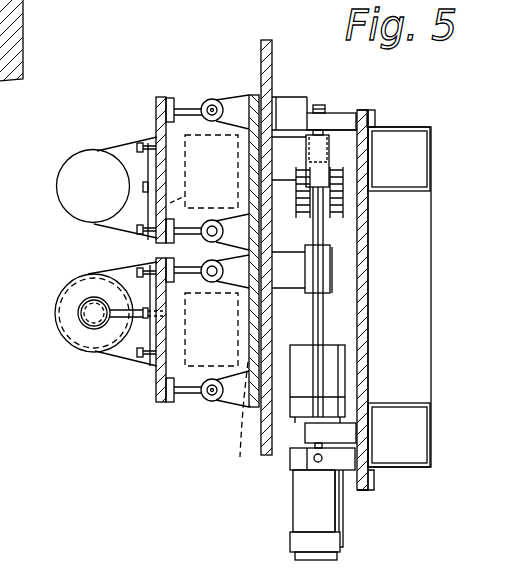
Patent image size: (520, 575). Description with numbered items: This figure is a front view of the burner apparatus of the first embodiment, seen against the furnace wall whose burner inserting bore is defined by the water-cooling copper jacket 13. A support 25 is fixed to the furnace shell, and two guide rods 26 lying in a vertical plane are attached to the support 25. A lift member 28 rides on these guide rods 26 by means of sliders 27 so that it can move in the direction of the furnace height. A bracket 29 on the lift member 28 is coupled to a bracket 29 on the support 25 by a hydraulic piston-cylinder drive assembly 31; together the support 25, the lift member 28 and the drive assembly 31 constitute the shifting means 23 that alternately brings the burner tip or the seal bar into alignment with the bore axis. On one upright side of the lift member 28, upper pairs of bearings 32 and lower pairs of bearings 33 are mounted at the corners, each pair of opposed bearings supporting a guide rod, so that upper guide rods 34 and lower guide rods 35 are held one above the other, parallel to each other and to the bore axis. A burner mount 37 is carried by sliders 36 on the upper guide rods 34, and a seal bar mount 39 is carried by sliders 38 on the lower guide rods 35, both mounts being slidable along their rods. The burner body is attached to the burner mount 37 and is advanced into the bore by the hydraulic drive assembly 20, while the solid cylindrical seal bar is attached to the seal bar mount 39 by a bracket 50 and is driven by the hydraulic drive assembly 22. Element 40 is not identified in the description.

The water-cooling copper jacket 13 is at (30, 1).
The drive assembly 20 is at (150, 208).
The drive assembly 22 is at (214, 289).
The shifting means 23 is at (347, 503).
The support 25 is at (431, 128).
The guide rods 26 is at (320, 322).
The sliders 27 is at (328, 162).
The lift member 28 is at (272, 60).
The bracket 29 is at (292, 113).
The drive assembly 31 is at (302, 498).
The upper pairs of bearings 32 is at (235, 100).
The lower pairs of bearings 33 is at (230, 404).
The guide rods 34 is at (210, 107).
The guide rods 35 is at (157, 377).
The sliders 36 is at (203, 109).
The burner mount 37 is at (157, 118).
The sliders 38 is at (187, 396).
The seal bar mount 39 is at (128, 352).
The roller 40 is at (68, 160).
The bracket 50 is at (66, 340).